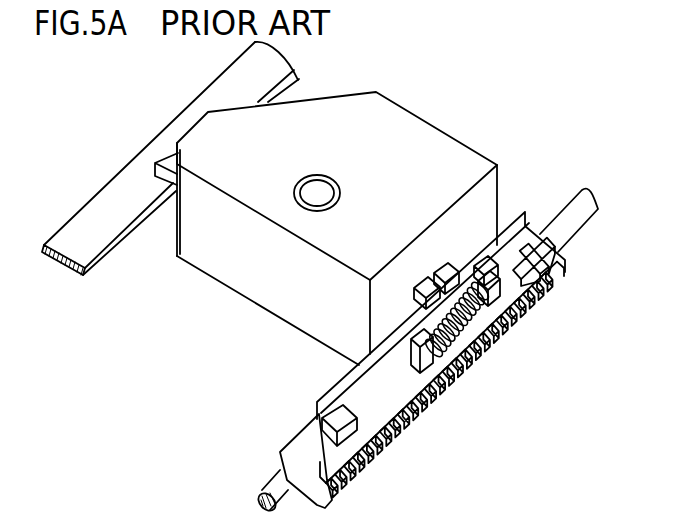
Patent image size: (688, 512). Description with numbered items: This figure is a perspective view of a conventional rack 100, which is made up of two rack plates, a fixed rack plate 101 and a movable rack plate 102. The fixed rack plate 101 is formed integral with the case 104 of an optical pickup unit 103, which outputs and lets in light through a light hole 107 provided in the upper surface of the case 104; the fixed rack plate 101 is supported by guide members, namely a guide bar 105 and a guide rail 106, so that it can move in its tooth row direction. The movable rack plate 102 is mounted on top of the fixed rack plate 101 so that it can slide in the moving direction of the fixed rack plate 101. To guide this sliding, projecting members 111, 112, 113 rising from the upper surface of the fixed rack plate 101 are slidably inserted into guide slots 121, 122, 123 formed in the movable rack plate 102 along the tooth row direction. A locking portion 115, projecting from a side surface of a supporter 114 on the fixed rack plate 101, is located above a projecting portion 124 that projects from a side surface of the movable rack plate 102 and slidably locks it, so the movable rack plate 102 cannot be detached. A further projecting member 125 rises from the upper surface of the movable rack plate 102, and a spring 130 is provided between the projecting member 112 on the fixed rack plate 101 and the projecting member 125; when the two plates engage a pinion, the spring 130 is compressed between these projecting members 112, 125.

The rack 100 is at (477, 391).
The fixed rack plate 101 is at (394, 446).
The movable rack plate 102 is at (307, 458).
The optical pickup unit 103 is at (428, 106).
The case 104 is at (253, 276).
The guide bar 105 is at (568, 222).
The guide rail 106 is at (127, 195).
The light hole 107 is at (315, 188).
The projecting member 111 is at (350, 477).
The projecting member 112 is at (427, 413).
The projecting member 113 is at (484, 258).
The supporter 114 is at (413, 301).
The locking portion 115 is at (432, 284).
The guide slot 121 is at (404, 429).
The guide slot 122 is at (494, 349).
The guide slot 123 is at (540, 258).
The projecting portion 124 is at (452, 270).
The projecting member 125 is at (550, 303).
The spring 130 is at (524, 328).